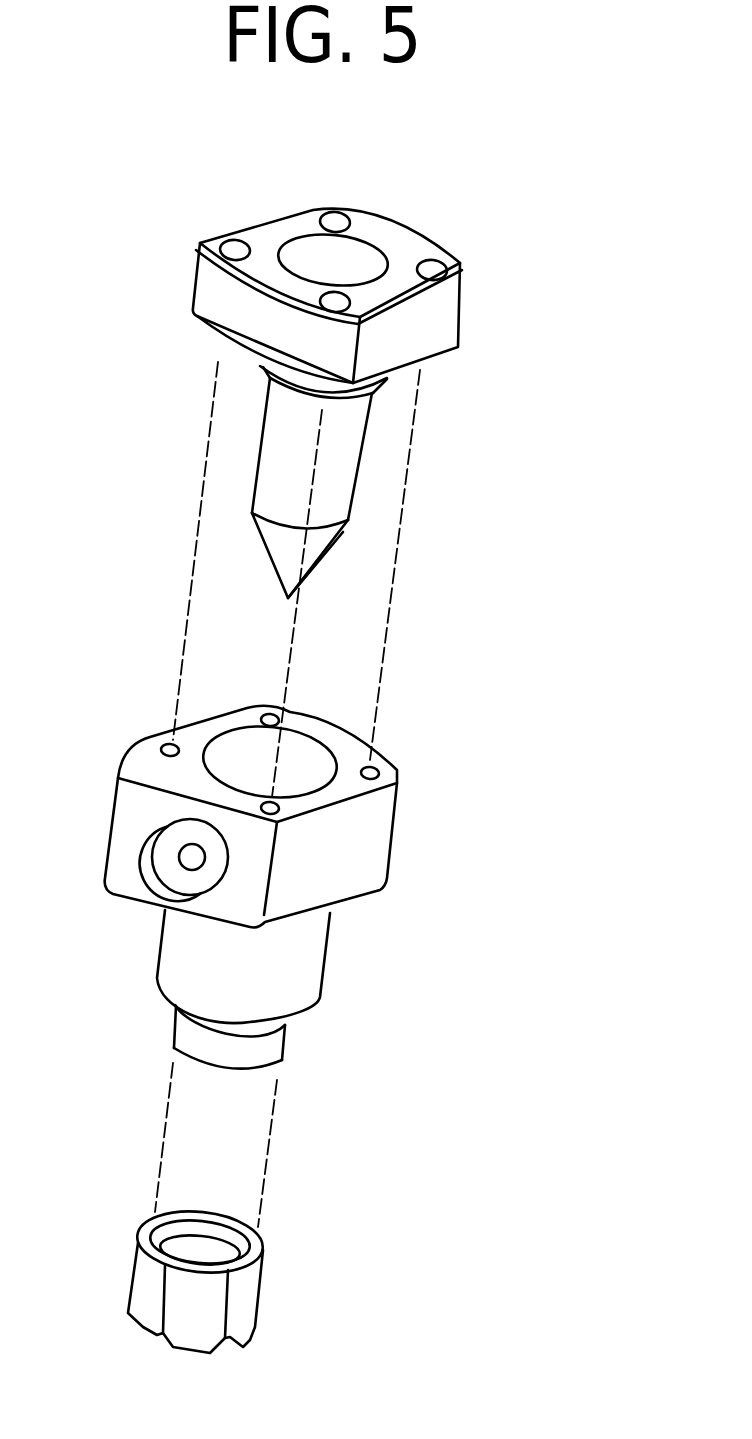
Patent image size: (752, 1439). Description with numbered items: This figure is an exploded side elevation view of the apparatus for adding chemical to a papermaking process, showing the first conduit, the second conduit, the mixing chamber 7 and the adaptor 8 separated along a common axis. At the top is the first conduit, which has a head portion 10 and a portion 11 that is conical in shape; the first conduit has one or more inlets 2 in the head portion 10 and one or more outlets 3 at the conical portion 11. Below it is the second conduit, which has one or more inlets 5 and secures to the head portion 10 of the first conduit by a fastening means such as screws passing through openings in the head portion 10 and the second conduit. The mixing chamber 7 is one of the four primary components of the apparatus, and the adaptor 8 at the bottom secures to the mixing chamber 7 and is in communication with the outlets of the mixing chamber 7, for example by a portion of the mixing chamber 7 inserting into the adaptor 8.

The inlet 2 is at (348, 255).
The outlet 3 is at (343, 532).
The inlet 5 is at (158, 878).
The mixing chamber 7 is at (380, 907).
The adaptor 8 is at (237, 1318).
The head portion 10 is at (462, 317).
The conical portion 11 is at (362, 447).